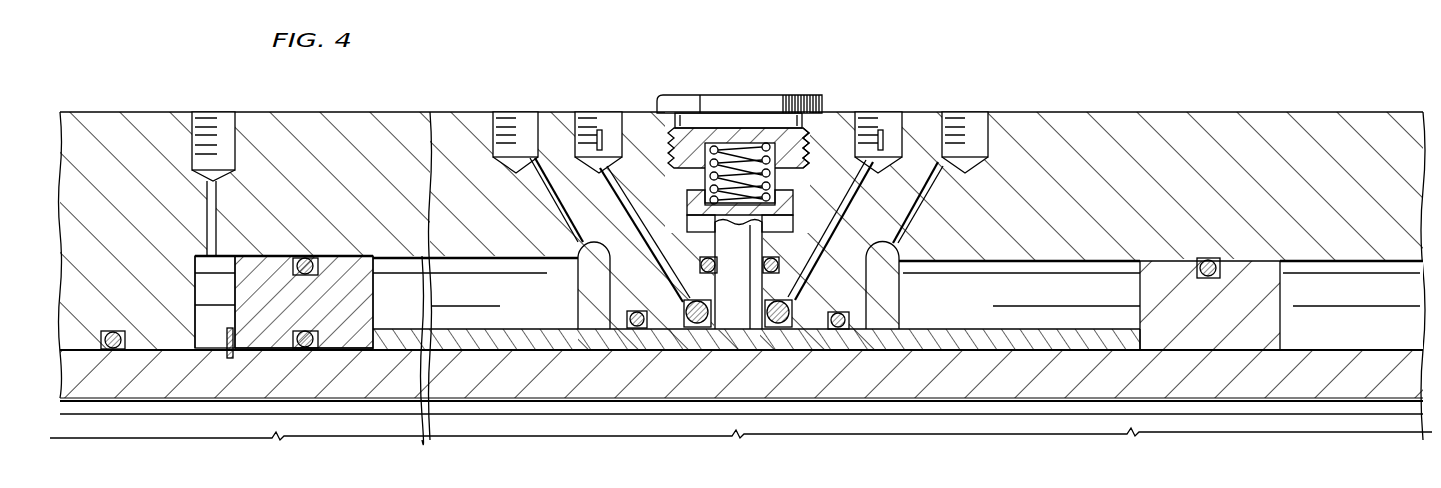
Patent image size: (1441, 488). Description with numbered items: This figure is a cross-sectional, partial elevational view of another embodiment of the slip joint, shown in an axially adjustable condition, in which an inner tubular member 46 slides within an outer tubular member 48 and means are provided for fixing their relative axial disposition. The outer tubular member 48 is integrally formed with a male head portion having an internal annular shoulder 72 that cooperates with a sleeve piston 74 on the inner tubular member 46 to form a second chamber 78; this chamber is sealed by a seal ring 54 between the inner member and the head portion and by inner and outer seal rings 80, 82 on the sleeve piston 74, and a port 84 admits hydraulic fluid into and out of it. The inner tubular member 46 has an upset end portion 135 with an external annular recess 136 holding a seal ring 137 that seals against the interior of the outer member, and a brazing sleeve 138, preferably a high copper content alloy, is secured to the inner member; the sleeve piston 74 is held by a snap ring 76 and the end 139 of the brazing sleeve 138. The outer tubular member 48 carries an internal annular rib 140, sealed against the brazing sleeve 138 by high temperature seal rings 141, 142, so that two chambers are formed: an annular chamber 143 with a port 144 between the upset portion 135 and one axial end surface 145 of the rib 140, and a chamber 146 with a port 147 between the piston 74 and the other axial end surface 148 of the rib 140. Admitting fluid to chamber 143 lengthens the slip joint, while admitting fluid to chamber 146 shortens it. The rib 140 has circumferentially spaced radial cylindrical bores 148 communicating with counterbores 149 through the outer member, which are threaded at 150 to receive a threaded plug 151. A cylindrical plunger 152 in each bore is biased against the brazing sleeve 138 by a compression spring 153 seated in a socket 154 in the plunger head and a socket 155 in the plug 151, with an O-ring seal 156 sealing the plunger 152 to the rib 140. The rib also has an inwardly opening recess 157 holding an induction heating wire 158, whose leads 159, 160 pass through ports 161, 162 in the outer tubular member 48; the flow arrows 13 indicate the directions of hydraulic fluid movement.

The flow direction arrow 13 is at (543, 312).
The inner tubular member 46 is at (1067, 382).
The outer tubular member 48 is at (1132, 133).
The seal ring 54 is at (113, 351).
The internal annular shoulder 72 is at (195, 290).
The sleeve piston 74 is at (350, 337).
The snap ring 76 is at (224, 337).
The second chamber 78 is at (221, 272).
The inner seal ring 80 is at (308, 350).
The outer seal ring 82 is at (307, 257).
The port 84 is at (212, 118).
The upset end portion 135 is at (1178, 327).
The annular recess 136 is at (1222, 272).
The seal ring 137 is at (1208, 258).
The brazing sleeve 138 is at (472, 340).
The end of brazing sleeve 139 is at (366, 347).
The rib 140 is at (862, 312).
The high temperature seal ring 141 is at (839, 325).
The high temperature seal ring 142 is at (636, 332).
The annular chamber 143 is at (1053, 265).
The port 144 is at (977, 120).
The axial end surface 145 is at (877, 322).
The chamber 146 is at (405, 270).
The port 147 is at (510, 118).
The cylindrical bore 148 is at (610, 290).
The counterbore 149 is at (682, 165).
The threads 150 is at (808, 152).
The threaded plug 151 is at (771, 100).
The plunger 152 is at (733, 317).
The compression spring 153 is at (800, 137).
The socket 154 is at (688, 203).
The socket 155 is at (740, 138).
The O-ring seal 156 is at (782, 265).
The recess 157 is at (702, 326).
The induction heating wire 158 is at (778, 320).
The lead 159 is at (880, 135).
The lead 160 is at (601, 135).
The port 161 is at (884, 140).
The port 162 is at (580, 118).